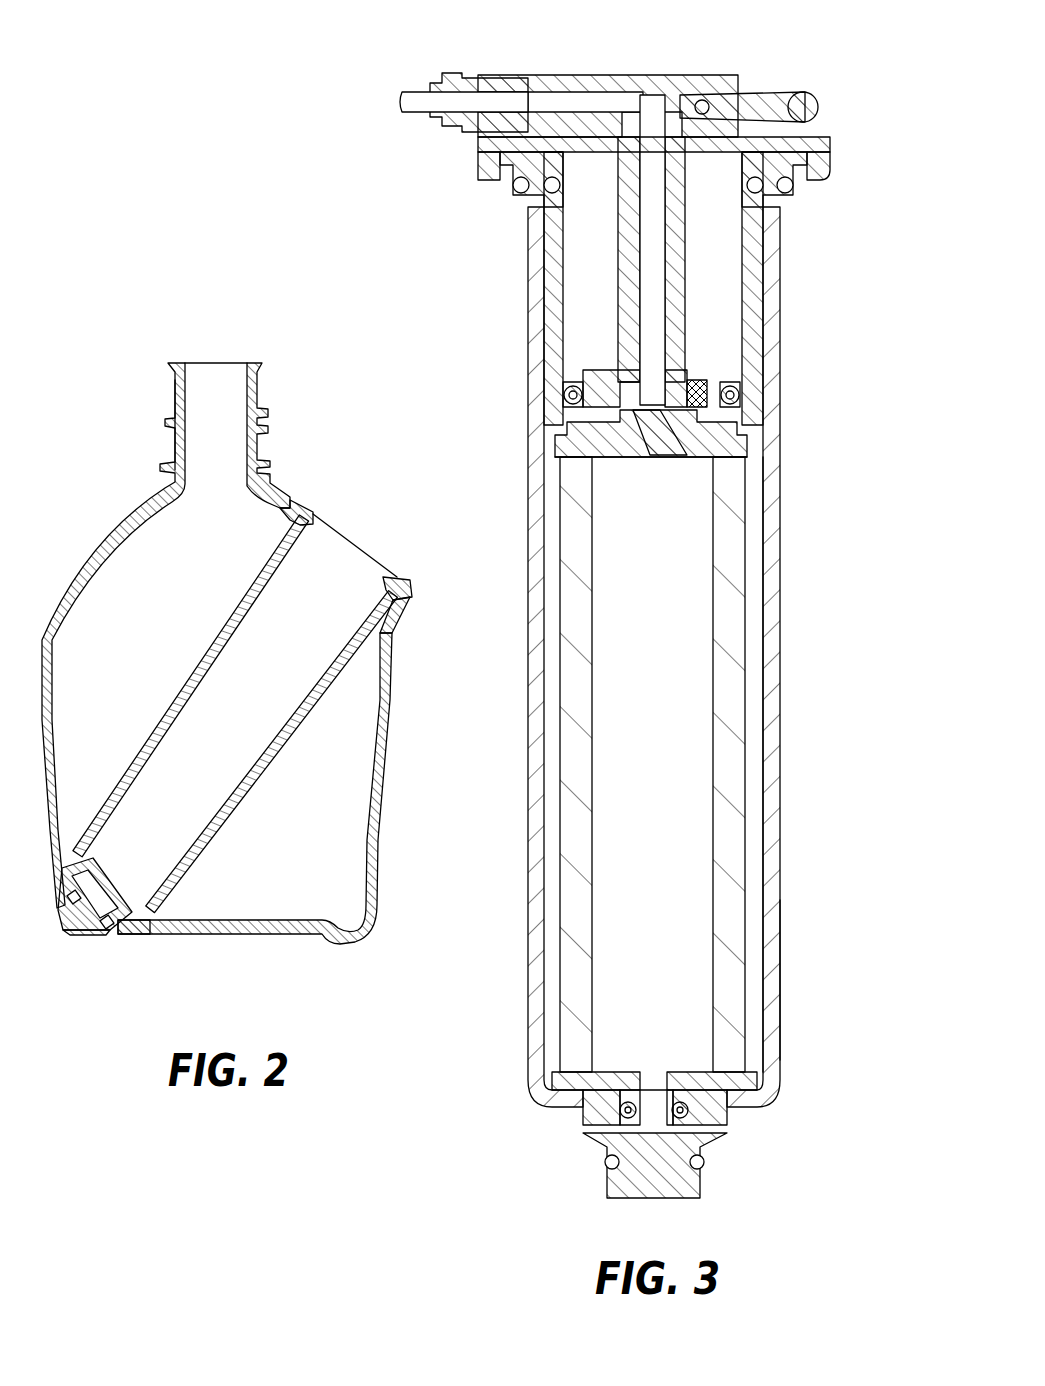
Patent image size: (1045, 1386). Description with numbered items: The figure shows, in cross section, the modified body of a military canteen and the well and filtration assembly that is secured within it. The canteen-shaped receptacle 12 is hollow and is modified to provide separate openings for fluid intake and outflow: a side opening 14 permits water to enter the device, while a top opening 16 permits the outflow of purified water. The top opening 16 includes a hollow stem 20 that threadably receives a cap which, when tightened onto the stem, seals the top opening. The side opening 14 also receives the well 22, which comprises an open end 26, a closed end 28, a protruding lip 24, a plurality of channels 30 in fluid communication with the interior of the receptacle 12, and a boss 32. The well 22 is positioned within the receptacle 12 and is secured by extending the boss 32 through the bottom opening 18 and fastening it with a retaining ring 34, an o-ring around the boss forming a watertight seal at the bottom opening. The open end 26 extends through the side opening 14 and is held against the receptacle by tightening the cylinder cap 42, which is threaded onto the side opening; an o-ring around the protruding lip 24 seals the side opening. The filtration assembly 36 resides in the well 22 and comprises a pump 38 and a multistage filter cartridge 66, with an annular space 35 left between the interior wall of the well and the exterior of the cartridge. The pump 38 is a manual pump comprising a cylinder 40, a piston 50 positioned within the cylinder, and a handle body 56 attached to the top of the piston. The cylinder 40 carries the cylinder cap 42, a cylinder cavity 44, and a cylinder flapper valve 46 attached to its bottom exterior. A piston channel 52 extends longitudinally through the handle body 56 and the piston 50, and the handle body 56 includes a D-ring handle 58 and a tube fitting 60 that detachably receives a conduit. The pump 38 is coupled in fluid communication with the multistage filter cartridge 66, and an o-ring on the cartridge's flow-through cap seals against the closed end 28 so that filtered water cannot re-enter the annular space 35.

In FIG. 2, the canteen-shaped receptacle 12 is at (90, 537).
In FIG. 2, the side opening 14 is at (410, 580).
In FIG. 2, the top opening 16 is at (200, 360).
In FIG. 2, the bottom opening 18 is at (108, 928).
In FIG. 2, the hollow stem 20 is at (172, 393).
In FIG. 2, the well 22 is at (227, 620).
In FIG. 3, the well 22 is at (537, 767).
In FIG. 2, the protruding lip 24 is at (300, 517).
In FIG. 2, the open end 26 is at (360, 540).
In FIG. 2, the closed end 28 is at (130, 927).
In FIG. 3, the closed end 28 is at (710, 1110).
In FIG. 2, the channels 30 is at (63, 865).
In FIG. 3, the channels 30 is at (583, 1125).
In FIG. 2, the boss 32 is at (75, 930).
In FIG. 3, the boss 32 is at (700, 1185).
In FIG. 2, the retaining ring 34 is at (70, 898).
In FIG. 3, the annular space 35 is at (755, 590).
In FIG. 3, the filtration assembly 36 is at (547, 435).
In FIG. 3, the pump 38 is at (765, 290).
In FIG. 3, the cylinder 40 is at (758, 305).
In FIG. 3, the cylinder cap 42 is at (830, 140).
In FIG. 3, the cylinder cavity 44 is at (727, 323).
In FIG. 3, the cylinder flapper valve 46 is at (747, 437).
In FIG. 3, the piston 50 is at (620, 237).
In FIG. 3, the piston channel 52 is at (653, 117).
In FIG. 3, the handle body 56 is at (683, 75).
In FIG. 3, the D-ring handle 58 is at (803, 95).
In FIG. 3, the tube fitting 60 is at (410, 87).
In FIG. 3, the multistage filter cartridge 66 is at (755, 925).